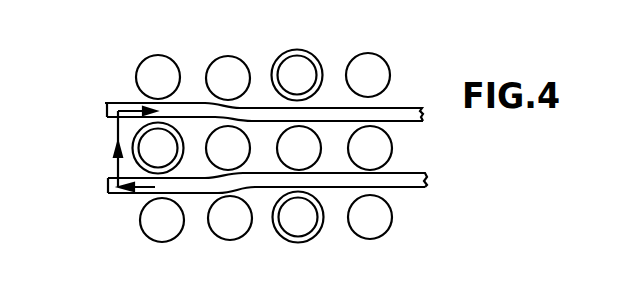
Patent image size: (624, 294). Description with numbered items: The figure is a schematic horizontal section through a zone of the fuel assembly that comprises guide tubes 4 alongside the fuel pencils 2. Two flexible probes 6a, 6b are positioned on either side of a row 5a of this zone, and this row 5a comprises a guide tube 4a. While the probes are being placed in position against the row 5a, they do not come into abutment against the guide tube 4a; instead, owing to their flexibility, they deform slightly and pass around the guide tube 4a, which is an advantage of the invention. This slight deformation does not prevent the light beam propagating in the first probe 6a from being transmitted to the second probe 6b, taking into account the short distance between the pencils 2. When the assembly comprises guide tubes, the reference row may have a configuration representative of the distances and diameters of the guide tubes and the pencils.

The pencils 2 is at (163, 70).
The guide tubes 4 is at (318, 55).
The second probe 6b is at (106, 104).
The row 5a is at (101, 152).
The guide tube 4a is at (108, 178).
The first probe 6a is at (106, 193).